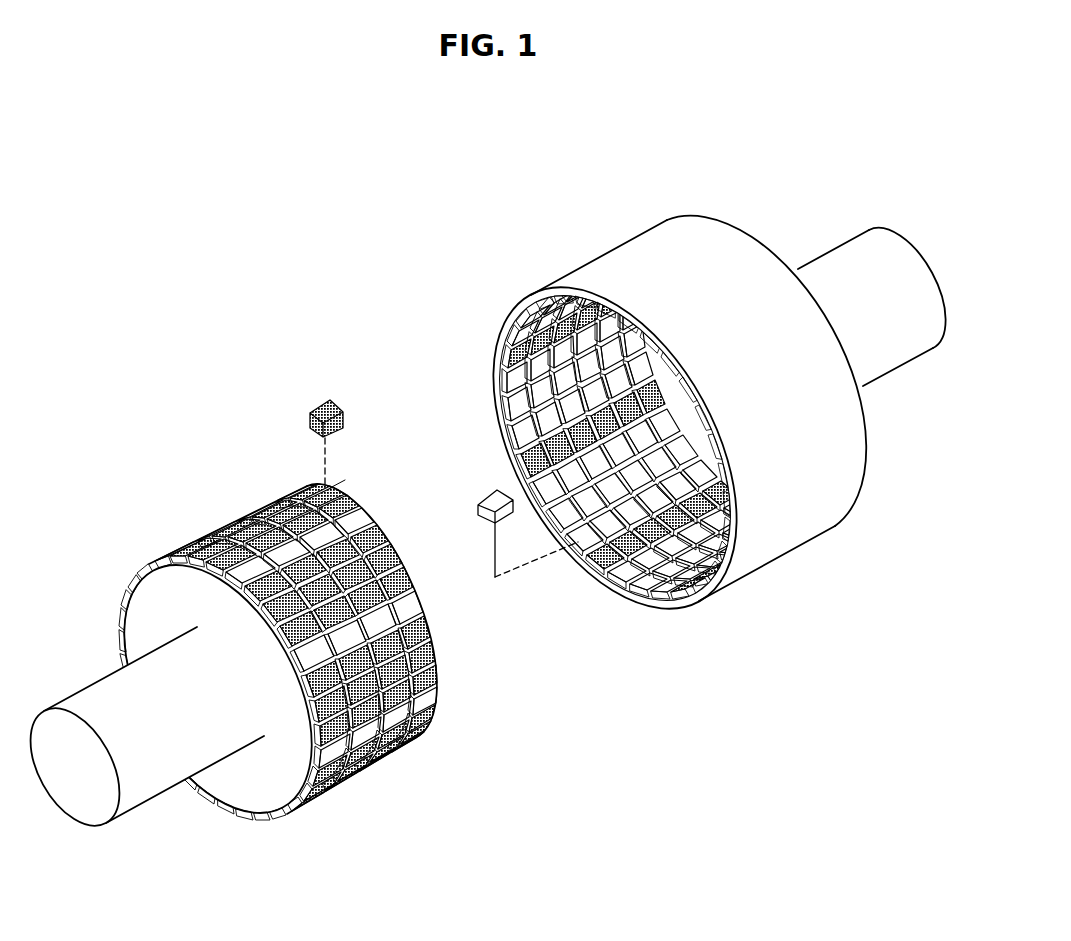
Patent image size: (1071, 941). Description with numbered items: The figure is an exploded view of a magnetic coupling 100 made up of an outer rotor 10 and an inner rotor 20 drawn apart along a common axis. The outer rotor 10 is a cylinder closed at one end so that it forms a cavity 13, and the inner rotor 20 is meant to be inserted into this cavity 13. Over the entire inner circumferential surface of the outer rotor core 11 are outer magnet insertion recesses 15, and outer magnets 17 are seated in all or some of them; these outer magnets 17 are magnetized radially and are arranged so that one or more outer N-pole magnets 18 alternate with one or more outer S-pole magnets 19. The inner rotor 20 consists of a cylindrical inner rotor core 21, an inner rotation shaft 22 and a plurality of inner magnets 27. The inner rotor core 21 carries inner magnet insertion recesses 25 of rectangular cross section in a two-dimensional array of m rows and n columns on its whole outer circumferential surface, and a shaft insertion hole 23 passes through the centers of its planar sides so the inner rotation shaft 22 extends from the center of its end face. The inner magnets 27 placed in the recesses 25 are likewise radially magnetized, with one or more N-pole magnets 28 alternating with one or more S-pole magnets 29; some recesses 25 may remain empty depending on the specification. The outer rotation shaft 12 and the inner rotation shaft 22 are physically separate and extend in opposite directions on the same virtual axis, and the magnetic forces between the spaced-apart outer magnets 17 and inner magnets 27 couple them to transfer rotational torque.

The magnetic coupling 100 is at (413, 250).
The outer rotor 10 is at (770, 566).
The outer rotor core 11 is at (651, 258).
The outer rotation shaft 12 is at (851, 257).
The cavity 13 is at (694, 464).
The outer magnet insertion recesses 15 is at (597, 587).
The outer magnets 17 is at (513, 580).
The outer N-pole magnets 18 is at (595, 572).
The outer S-pole magnets 19 is at (578, 540).
The inner rotor 20 is at (362, 776).
The inner rotor core 21 is at (148, 622).
The inner rotation shaft 22 is at (88, 688).
The shaft insertion hole 23 is at (262, 722).
The inner magnet insertion recesses 25 is at (337, 498).
The inner magnets 27 is at (322, 402).
The N-pole magnets 28 is at (376, 529).
The S-pole magnets 29 is at (347, 511).